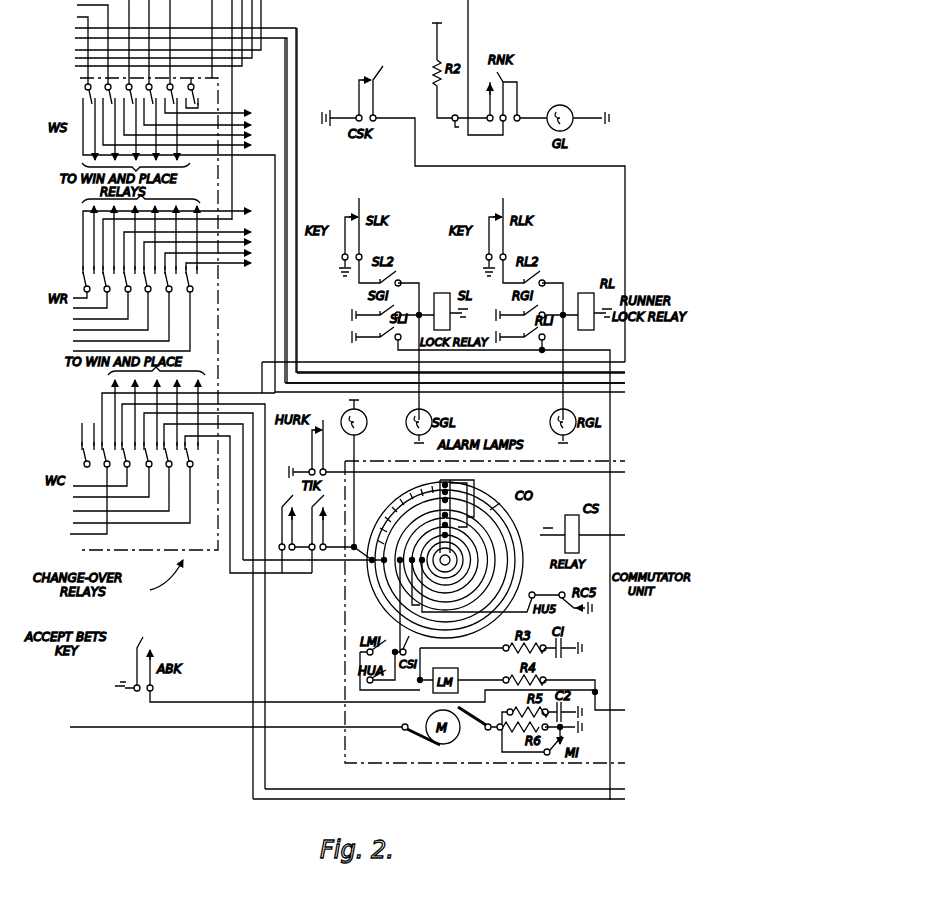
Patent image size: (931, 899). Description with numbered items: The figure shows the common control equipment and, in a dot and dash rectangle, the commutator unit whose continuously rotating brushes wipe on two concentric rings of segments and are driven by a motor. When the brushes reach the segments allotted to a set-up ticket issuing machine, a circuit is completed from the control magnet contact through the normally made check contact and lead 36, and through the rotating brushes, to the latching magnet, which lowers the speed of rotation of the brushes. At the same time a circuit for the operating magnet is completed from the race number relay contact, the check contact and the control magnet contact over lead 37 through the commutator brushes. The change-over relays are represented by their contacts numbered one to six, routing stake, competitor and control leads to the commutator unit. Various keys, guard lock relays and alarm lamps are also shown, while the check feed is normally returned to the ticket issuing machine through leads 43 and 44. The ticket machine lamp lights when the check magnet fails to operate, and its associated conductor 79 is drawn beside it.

The lamp TL conductor 79 is at (361, 473).
The lead 37 is at (333, 545).
The lead 36 is at (315, 560).
The lead 43 is at (445, 779).
The lead 44 is at (439, 808).